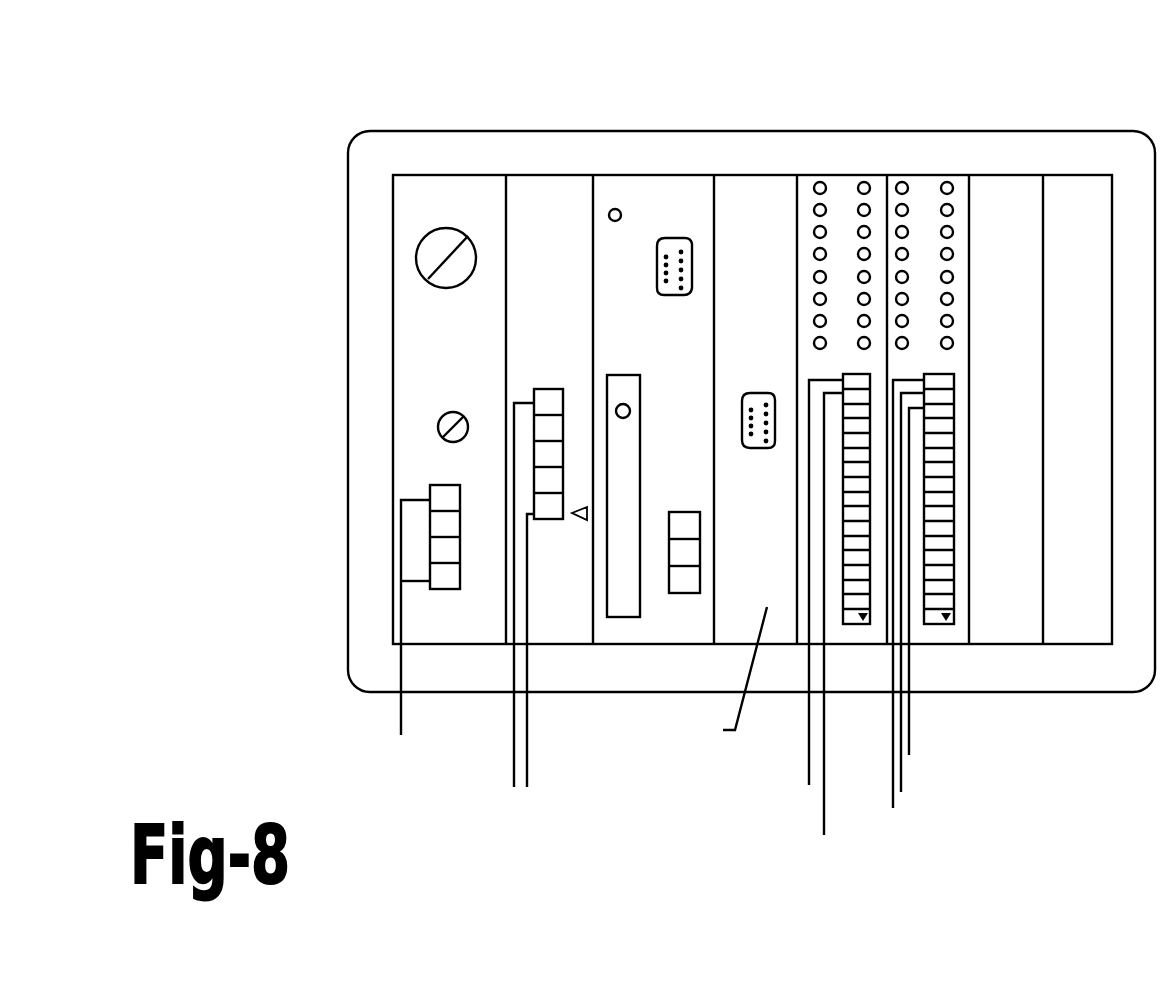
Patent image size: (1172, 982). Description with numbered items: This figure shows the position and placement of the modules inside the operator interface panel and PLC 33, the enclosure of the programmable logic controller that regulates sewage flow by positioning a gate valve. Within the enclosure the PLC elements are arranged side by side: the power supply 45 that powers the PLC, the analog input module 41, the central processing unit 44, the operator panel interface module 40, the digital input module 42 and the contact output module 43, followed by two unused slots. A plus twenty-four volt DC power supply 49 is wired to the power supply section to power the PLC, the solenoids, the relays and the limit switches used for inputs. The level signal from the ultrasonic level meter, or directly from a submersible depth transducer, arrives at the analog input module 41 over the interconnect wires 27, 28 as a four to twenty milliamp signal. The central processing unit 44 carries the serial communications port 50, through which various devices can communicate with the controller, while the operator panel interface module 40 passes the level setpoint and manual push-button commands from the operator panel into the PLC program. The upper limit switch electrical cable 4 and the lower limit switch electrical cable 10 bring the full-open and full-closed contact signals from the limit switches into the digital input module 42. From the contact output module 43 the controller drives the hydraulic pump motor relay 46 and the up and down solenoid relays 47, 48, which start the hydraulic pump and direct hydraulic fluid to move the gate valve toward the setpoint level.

The operator interface panel and PLC 33 is at (686, 409).
The power supply 45 is at (411, 331).
The analog input module 41 is at (524, 288).
The central processing unit 44 is at (636, 348).
The operator panel interface module 40 is at (709, 413).
The digital input module 42 is at (825, 343).
The contact output module 43 is at (955, 340).
The +24 VDC power supply 49 is at (312, 617).
The interconnect wire 27 is at (451, 595).
The interconnect wire 28 is at (578, 663).
The serial communications port 50 is at (630, 622).
The lower limit switch electrical cable 10 is at (777, 593).
The upper limit switch electrical cable 4 is at (791, 619).
The motor relay 46 is at (952, 610).
The up solenoid relay 47 is at (956, 598).
The down solenoid relay 48 is at (962, 581).